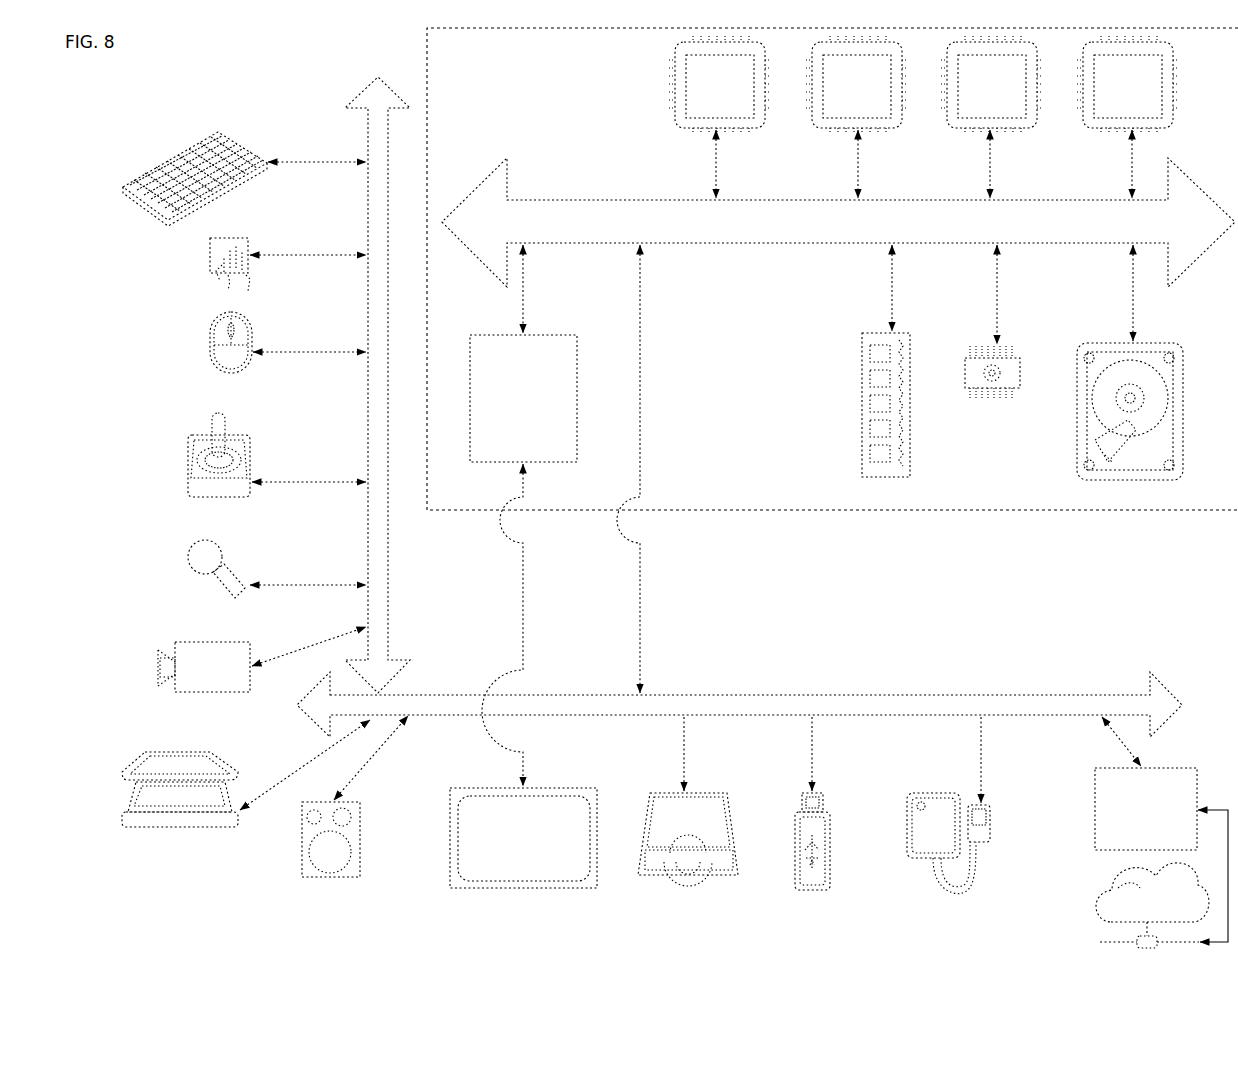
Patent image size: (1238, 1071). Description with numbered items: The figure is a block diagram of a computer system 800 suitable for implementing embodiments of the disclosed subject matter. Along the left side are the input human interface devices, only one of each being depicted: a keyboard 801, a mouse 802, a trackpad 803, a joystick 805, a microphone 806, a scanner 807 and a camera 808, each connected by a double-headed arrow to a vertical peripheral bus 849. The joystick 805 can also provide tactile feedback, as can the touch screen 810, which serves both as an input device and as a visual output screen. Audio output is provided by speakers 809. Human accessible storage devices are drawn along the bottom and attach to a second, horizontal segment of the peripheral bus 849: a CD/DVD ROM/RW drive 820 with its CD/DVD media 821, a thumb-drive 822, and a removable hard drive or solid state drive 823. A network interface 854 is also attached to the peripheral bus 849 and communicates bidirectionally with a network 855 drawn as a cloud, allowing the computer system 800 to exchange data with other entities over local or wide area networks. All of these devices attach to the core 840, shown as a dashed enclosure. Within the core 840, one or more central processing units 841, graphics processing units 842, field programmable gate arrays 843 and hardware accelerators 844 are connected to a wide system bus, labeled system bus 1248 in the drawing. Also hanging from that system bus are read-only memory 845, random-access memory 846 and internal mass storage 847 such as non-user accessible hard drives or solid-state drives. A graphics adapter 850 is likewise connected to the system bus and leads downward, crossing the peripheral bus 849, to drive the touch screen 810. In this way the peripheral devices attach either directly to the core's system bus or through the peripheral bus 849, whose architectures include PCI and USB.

The computer system 800 is at (649, 488).
The keyboard 801 is at (123, 187).
The mouse 802 is at (207, 348).
The trackpad 803 is at (206, 260).
The joystick 805 is at (190, 482).
The microphone 806 is at (188, 555).
The scanner 807 is at (122, 815).
The camera 808 is at (160, 668).
The speakers 809 is at (335, 877).
The touch screen 810 is at (525, 888).
The CD/DVD ROM/RW 820 is at (735, 875).
The CD/DVD media 821 is at (672, 877).
The thumb-drive 822 is at (812, 890).
The removable hard drive or solid state drive 823 is at (912, 860).
The core 840 is at (827, 512).
The central processing unit 841 is at (720, 117).
The graphics processing unit 842 is at (857, 117).
The field programmable gate array 843 is at (992, 117).
The hardware accelerator 844 is at (1128, 117).
The read-only memory 845 is at (980, 400).
The random-access memory 846 is at (862, 410).
The internal mass storage 847 is at (1087, 345).
The peripheral bus 849 is at (365, 118).
The graphics adapter 850 is at (523, 515).
The network interface 854 is at (1161, 829).
The network 855 is at (1108, 900).
The system bus 1248 is at (838, 222).